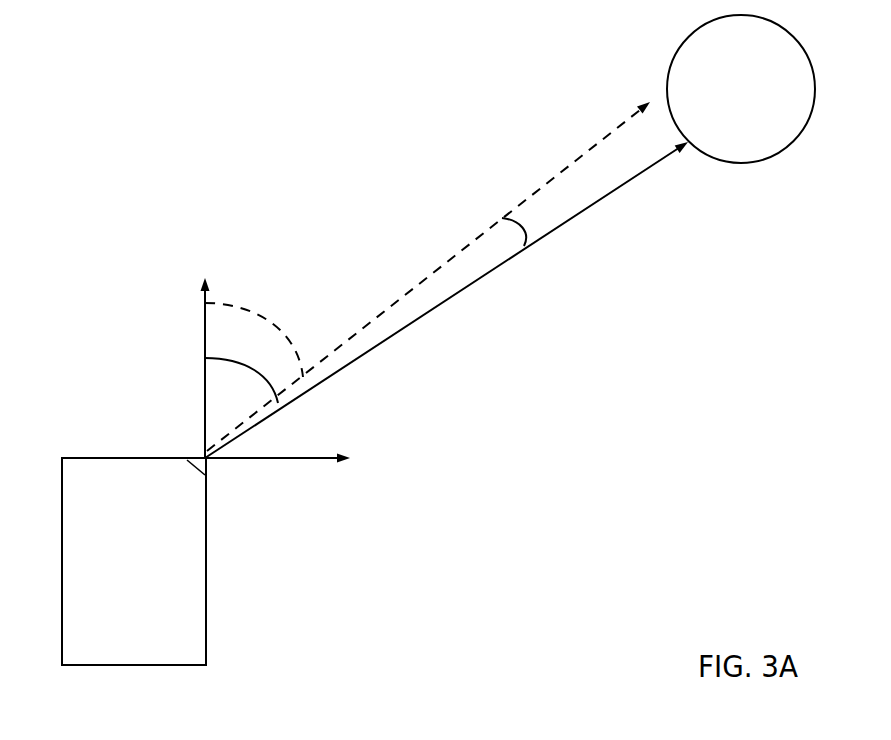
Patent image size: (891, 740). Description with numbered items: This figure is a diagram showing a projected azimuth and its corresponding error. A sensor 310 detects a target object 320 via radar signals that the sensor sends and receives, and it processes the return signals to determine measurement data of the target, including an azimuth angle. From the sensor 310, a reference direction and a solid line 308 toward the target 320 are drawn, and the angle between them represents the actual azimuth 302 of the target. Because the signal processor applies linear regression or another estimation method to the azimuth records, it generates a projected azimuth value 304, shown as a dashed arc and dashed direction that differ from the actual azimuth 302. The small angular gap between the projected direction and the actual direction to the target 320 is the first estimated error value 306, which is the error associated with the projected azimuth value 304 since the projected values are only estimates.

The actual azimuth 302 is at (241, 386).
The projected azimuth value 304 is at (278, 321).
The first estimated error value 306 is at (528, 215).
The measured line of sight vector to target 308 is at (450, 312).
The sensor 310 is at (134, 561).
The target object 320 is at (741, 89).